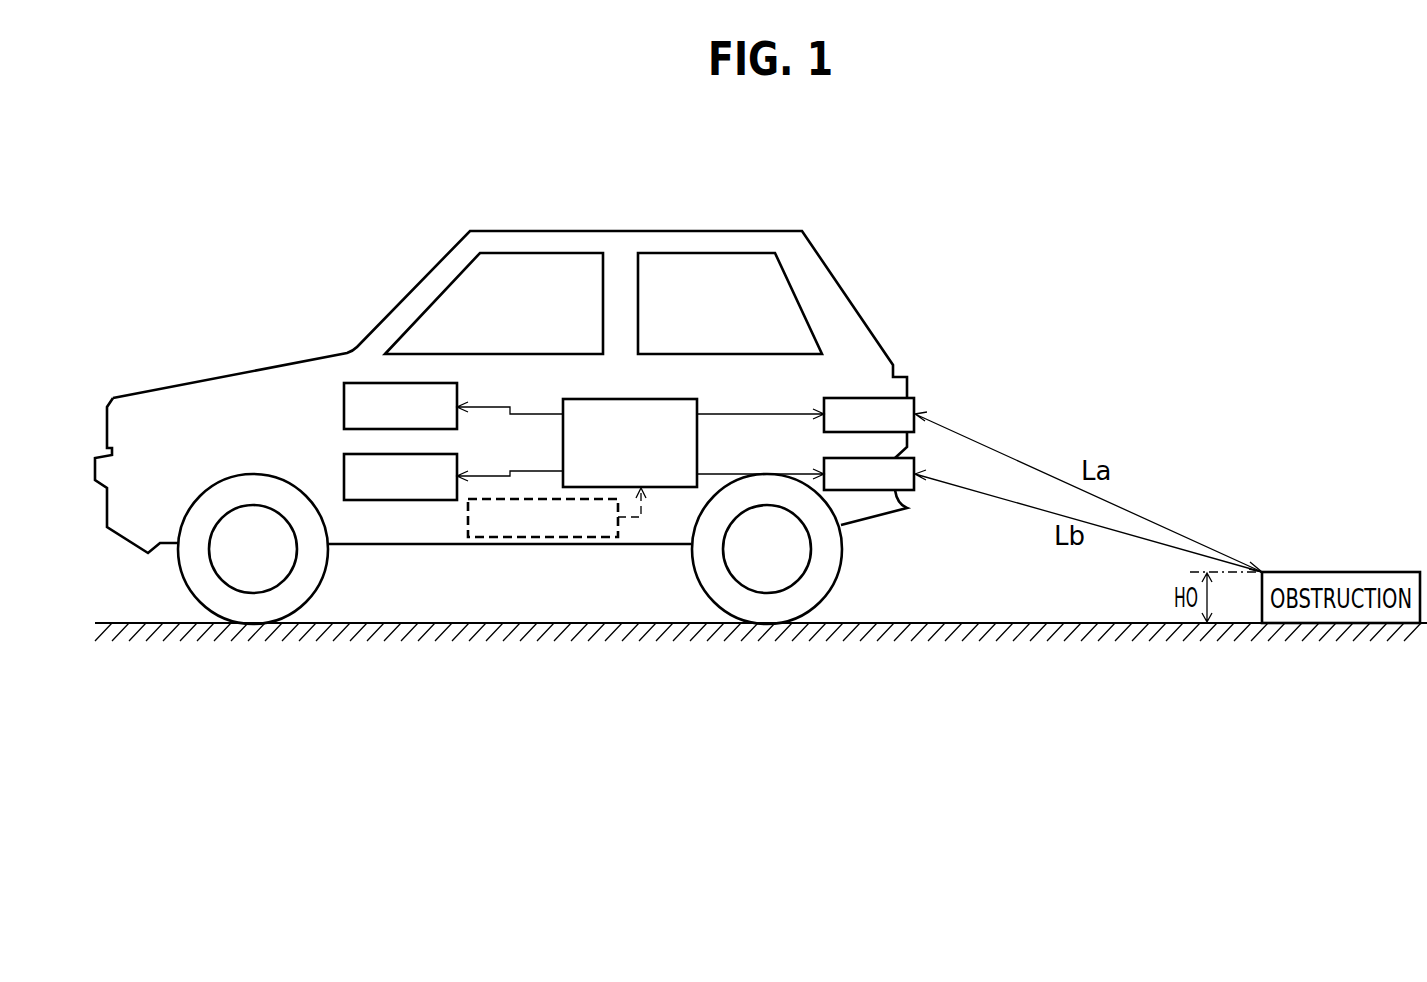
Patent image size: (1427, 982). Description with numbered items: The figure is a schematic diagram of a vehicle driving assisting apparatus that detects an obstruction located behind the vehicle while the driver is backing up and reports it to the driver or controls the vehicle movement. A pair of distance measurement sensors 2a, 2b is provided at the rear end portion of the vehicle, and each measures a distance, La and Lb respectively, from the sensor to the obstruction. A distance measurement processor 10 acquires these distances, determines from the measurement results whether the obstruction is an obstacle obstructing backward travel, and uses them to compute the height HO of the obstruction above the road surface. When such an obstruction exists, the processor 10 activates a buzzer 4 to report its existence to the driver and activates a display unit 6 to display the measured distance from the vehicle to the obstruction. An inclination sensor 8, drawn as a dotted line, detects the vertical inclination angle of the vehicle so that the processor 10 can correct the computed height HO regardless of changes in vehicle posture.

The buzzer 4 is at (343, 404).
The display unit 6 is at (343, 473).
The distance measurement processor 10 is at (655, 399).
The distance measurement sensor 2a is at (897, 398).
The distance measurement sensor 2b is at (905, 506).
The inclination sensor 8 is at (540, 537).